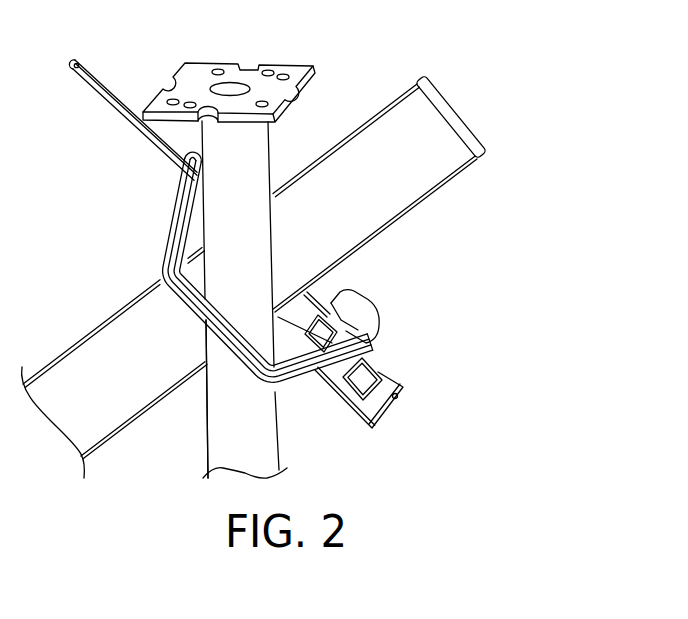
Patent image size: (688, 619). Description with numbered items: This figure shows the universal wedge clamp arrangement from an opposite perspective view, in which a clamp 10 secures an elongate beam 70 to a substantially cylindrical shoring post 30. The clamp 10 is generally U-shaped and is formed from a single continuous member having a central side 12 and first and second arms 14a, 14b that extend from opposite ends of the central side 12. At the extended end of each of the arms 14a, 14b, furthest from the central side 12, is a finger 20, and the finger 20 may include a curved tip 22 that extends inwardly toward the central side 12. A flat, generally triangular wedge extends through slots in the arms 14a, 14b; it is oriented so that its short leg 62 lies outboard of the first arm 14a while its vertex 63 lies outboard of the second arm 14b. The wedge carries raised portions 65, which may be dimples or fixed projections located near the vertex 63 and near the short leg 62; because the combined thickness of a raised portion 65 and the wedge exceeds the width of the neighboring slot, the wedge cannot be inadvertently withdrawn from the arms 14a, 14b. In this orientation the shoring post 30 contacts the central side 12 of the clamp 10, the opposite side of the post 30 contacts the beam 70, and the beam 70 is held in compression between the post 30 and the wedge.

The clamp 10 is at (168, 237).
The central side 12 is at (203, 313).
The first arm 14a is at (318, 387).
The second arm 14b is at (183, 210).
The finger 20 is at (357, 310).
The tip 22 is at (334, 297).
The shoring post 30 is at (257, 160).
The short leg 62 is at (386, 412).
The vertex 63 is at (82, 84).
The raised portion 65 is at (78, 62).
The beam 70 is at (435, 173).